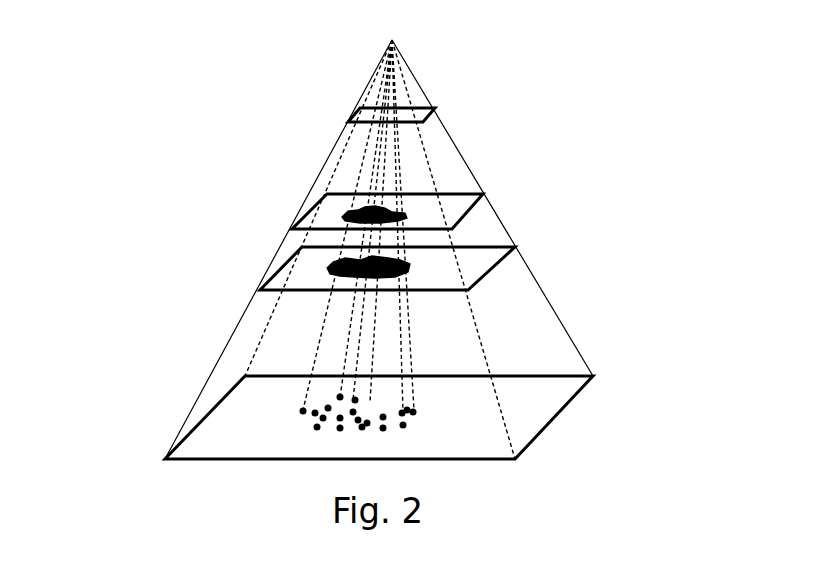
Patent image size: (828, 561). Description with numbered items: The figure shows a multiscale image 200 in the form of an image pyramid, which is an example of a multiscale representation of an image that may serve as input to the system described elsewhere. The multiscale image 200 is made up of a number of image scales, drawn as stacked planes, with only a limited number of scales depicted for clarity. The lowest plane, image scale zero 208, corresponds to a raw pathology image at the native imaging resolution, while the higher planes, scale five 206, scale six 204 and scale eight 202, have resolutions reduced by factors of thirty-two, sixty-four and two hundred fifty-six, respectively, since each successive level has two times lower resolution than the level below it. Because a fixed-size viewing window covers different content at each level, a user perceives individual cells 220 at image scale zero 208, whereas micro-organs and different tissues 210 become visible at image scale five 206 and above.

The multiscale image 200 is at (184, 91).
The image scale 8 202 is at (427, 118).
The image scale 6 204 is at (478, 203).
The image scale 5 206 is at (505, 258).
The image scale 0 208 is at (563, 410).
The micro-organs and different tissues 210 is at (311, 271).
The individual cells 220 is at (281, 412).